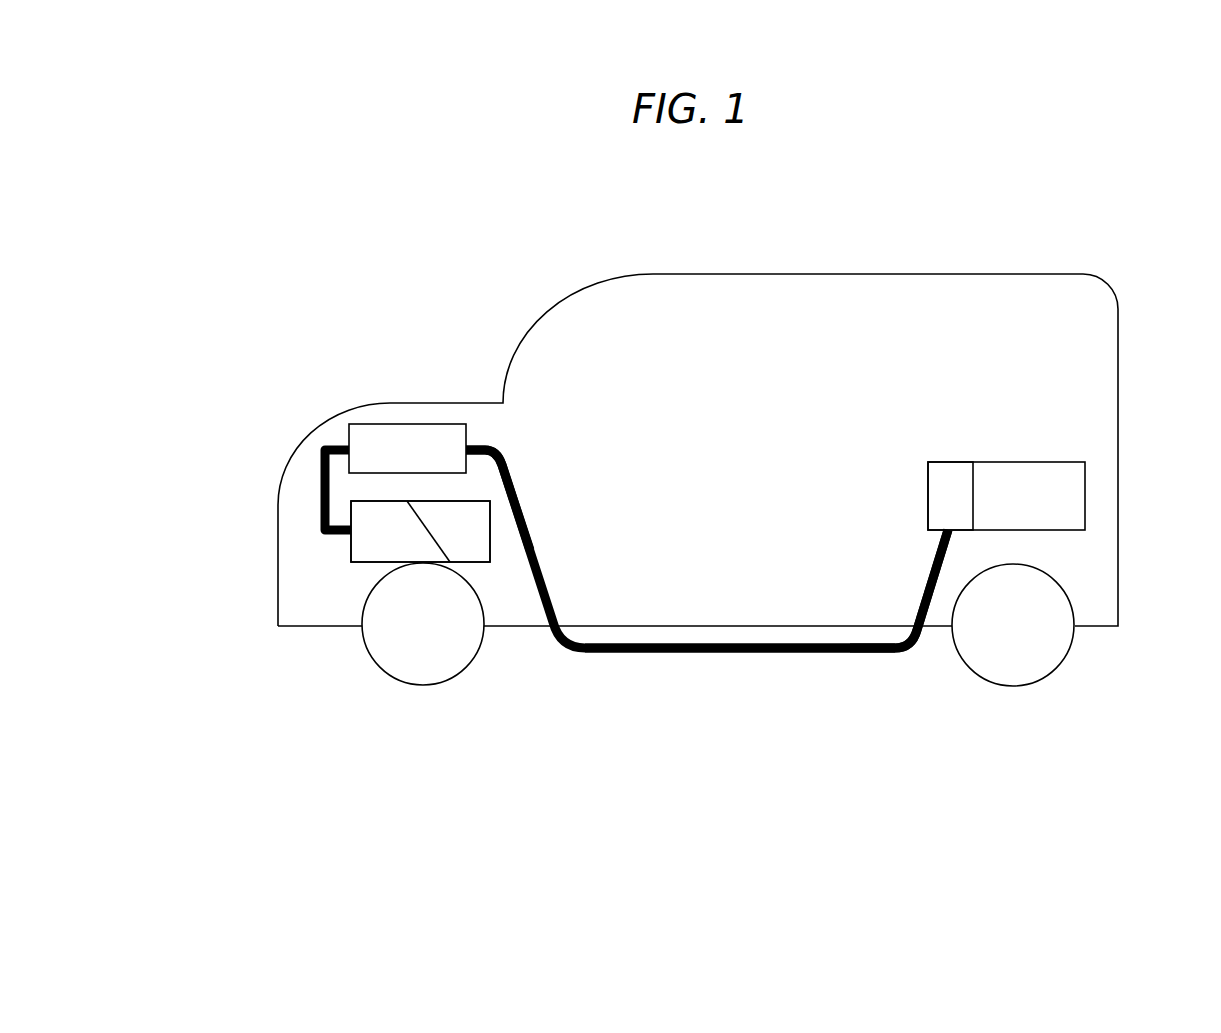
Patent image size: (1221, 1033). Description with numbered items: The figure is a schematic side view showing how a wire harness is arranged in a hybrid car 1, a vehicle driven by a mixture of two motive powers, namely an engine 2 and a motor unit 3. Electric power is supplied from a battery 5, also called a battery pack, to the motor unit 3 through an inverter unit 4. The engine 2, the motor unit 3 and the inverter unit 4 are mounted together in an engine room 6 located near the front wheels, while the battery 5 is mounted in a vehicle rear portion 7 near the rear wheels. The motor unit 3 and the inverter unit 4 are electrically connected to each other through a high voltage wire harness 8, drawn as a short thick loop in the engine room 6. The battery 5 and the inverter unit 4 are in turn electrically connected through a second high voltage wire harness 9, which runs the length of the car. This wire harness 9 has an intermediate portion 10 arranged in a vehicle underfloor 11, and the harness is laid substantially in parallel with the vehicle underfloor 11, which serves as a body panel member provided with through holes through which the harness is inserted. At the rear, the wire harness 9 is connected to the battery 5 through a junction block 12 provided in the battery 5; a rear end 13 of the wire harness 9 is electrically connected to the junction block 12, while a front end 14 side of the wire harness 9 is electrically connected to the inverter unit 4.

The hybrid car 1 is at (424, 301).
The engine 2 is at (473, 539).
The motor unit 3 is at (365, 545).
The inverter unit 4 is at (378, 440).
The battery 5 is at (1033, 473).
The engine room 6 is at (300, 590).
The vehicle rear portion 7 is at (1092, 560).
The high voltage wire harness 8 is at (314, 478).
The high voltage wire harness 9 is at (636, 660).
The intermediate portion 10 is at (753, 655).
The vehicle underfloor 11 is at (850, 630).
The junction block 12 is at (940, 473).
The rear end 13 is at (935, 553).
The front end 14 is at (498, 450).